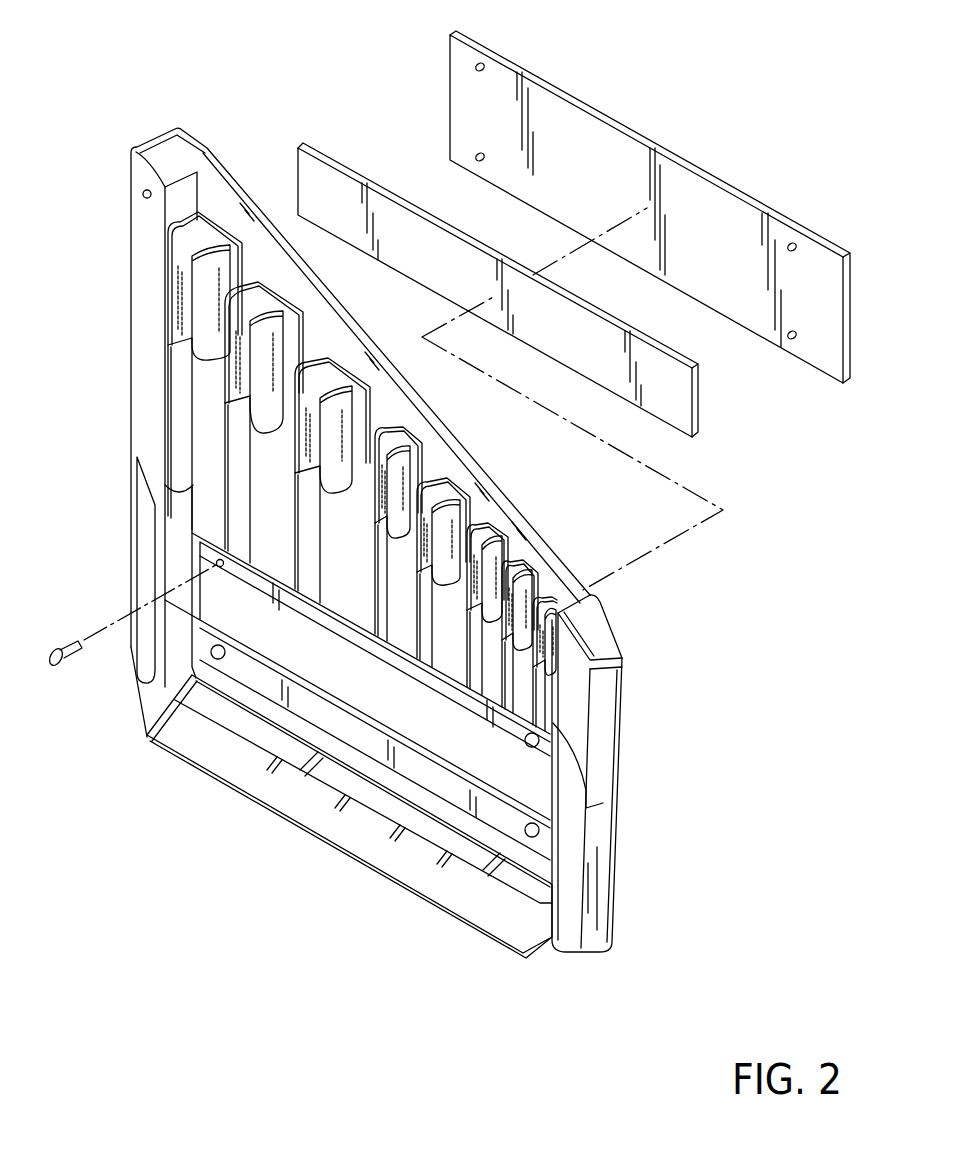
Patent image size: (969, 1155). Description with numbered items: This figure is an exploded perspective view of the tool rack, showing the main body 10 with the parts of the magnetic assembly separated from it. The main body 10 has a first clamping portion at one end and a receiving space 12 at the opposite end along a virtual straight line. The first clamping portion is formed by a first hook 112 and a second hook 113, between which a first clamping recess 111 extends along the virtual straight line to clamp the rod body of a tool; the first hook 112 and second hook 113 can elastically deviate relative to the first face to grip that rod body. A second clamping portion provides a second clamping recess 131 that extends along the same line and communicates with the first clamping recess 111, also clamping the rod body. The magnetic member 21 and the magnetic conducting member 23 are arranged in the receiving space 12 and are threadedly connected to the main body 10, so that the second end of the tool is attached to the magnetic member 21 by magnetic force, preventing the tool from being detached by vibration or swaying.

The main body 10 is at (502, 510).
The receiving space 12 is at (258, 653).
The magnetic member 21 is at (342, 192).
The magnetic conducting member 23 is at (812, 253).
The first clamping recess 111 is at (268, 268).
The first hook 112 is at (220, 323).
The second hook 113 is at (262, 352).
The second clamping recess 131 is at (236, 462).